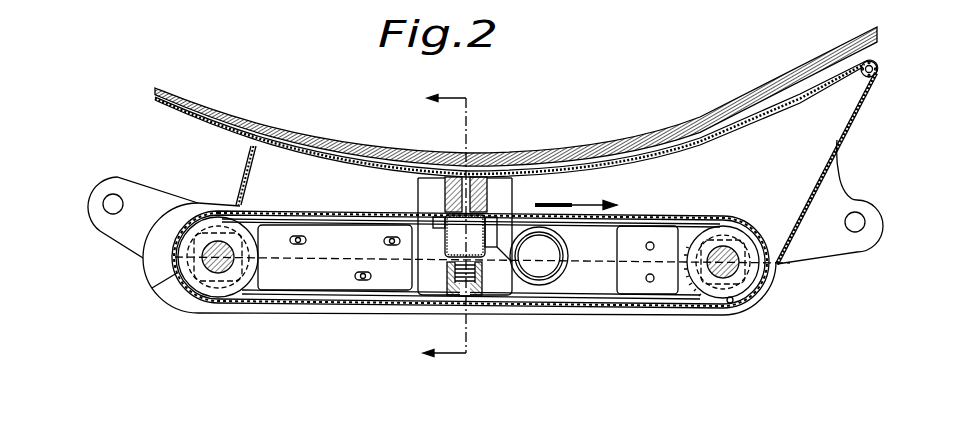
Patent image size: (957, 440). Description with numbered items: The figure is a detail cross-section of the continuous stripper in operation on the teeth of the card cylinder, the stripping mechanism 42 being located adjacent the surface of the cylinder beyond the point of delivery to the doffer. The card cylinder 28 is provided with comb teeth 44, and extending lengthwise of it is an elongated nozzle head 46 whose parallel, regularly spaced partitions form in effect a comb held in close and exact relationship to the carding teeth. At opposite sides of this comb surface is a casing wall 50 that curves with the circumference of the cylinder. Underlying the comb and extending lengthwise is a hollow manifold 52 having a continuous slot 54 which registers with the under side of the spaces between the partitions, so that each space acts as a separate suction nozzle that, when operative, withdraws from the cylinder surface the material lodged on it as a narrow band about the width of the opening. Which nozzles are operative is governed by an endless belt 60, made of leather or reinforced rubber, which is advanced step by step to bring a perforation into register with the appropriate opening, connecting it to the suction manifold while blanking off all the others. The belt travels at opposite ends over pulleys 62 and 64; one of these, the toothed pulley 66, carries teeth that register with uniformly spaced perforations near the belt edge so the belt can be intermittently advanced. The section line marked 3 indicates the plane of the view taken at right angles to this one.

The section line 3- 3 is at (432, 226).
The card cylinder 28 is at (688, 122).
The stripping mechanism 42 is at (237, 175).
The comb teeth 44 is at (882, 43).
The nozzle head 46 is at (487, 195).
The casing wall 50 is at (695, 145).
The manifold 52 is at (445, 243).
The slot 54 is at (458, 243).
The belt 60 is at (643, 215).
The pulley 62 is at (263, 283).
The pulley 64 is at (730, 302).
The toothed pulley 66 is at (684, 284).